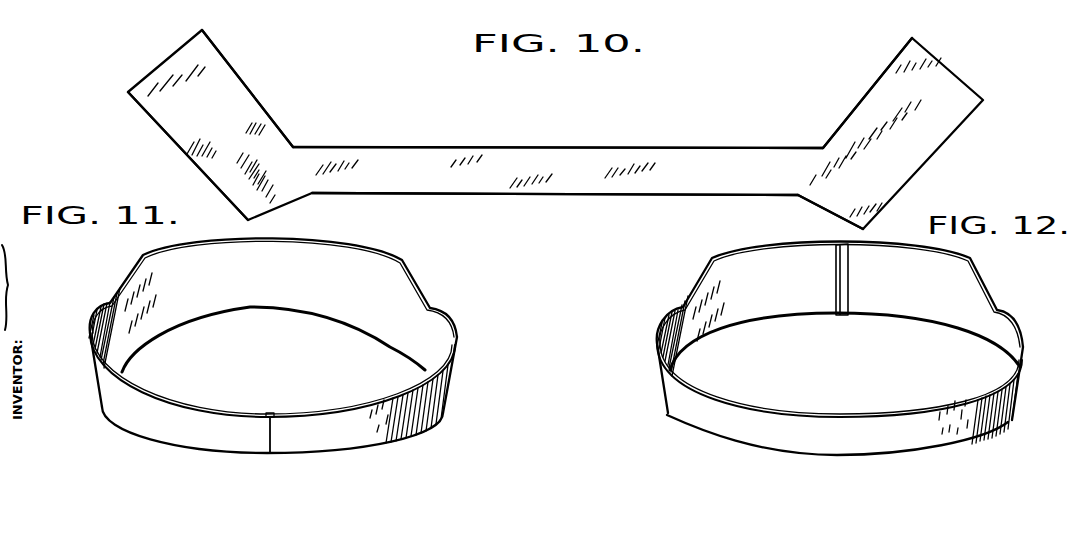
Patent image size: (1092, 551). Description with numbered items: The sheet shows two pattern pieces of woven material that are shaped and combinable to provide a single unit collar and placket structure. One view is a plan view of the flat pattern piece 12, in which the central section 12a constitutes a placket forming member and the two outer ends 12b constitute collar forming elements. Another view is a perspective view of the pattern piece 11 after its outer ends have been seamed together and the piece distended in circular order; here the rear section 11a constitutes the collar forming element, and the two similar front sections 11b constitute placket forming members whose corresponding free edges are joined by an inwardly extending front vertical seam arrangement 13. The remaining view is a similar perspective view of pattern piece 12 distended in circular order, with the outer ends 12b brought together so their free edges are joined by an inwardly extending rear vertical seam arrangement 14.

In FIG. 11, the pattern piece 11 is at (261, 341).
In FIG. 11, the rear section 11a is at (342, 262).
In FIG. 11, the front sections 11b is at (148, 427).
In FIG. 10, the pattern piece 12 is at (555, 130).
In FIG. 12, the pattern piece 12 is at (818, 356).
In FIG. 10, the central section 12a is at (563, 182).
In FIG. 12, the central section 12a is at (774, 437).
In FIG. 10, the outer ends 12b is at (228, 78).
In FIG. 12, the outer ends 12b is at (748, 276).
In FIG. 11, the front vertical seam arrangement 13 is at (270, 413).
In FIG. 12, the rear vertical seam arrangement 14 is at (835, 307).